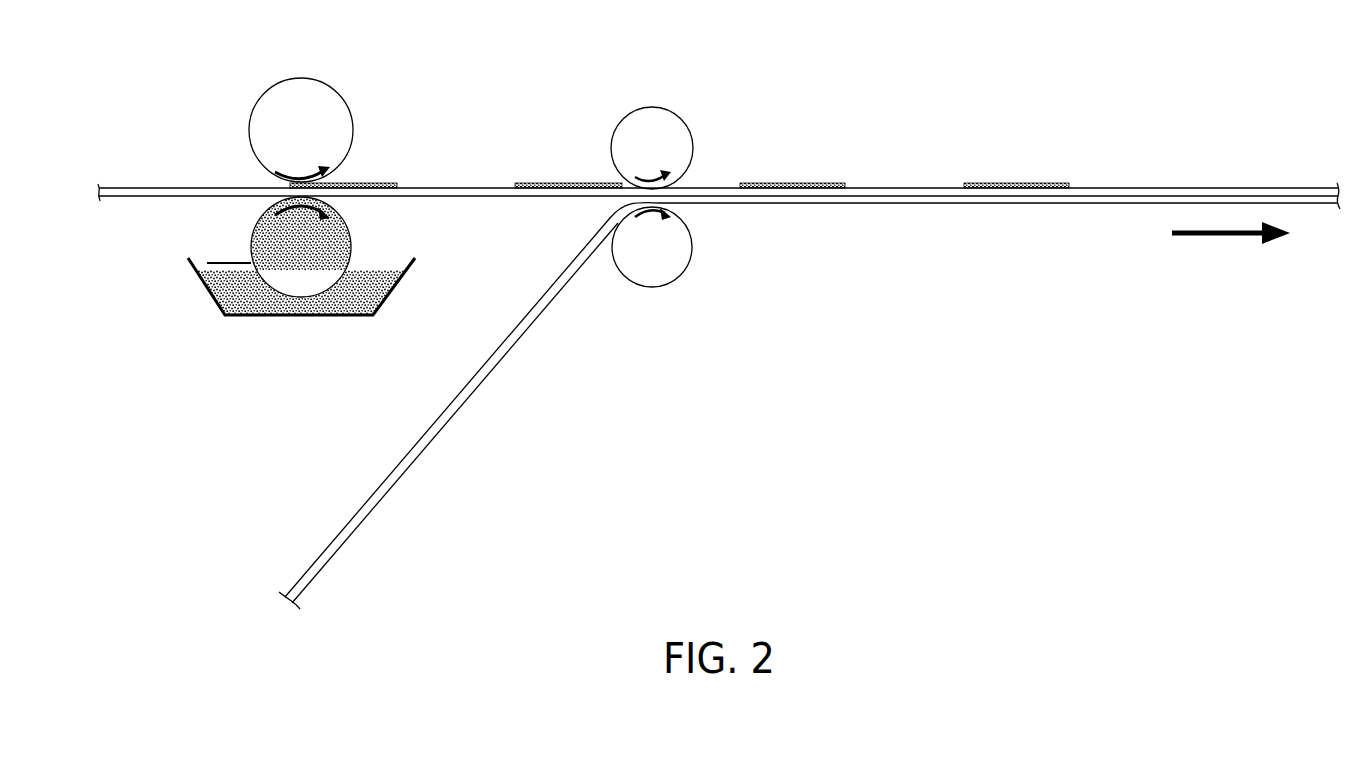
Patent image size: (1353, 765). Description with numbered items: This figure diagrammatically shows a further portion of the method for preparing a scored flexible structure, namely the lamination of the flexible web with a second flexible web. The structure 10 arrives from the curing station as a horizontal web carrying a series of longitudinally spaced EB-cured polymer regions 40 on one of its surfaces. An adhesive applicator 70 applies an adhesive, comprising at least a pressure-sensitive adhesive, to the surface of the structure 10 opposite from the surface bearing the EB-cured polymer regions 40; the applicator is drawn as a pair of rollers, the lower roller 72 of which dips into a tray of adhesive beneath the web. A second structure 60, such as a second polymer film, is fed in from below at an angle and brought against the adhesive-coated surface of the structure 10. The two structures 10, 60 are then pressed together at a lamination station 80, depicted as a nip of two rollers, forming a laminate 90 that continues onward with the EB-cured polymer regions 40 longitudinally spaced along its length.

The structure 10 is at (178, 193).
The EB-cured polymer regions 40 is at (572, 185).
The second structure 60 is at (413, 457).
The adhesive applicator 70 is at (346, 98).
The applicator roller in tray 72 is at (342, 236).
The lamination station 80 is at (677, 108).
The laminate 90 is at (1249, 186).